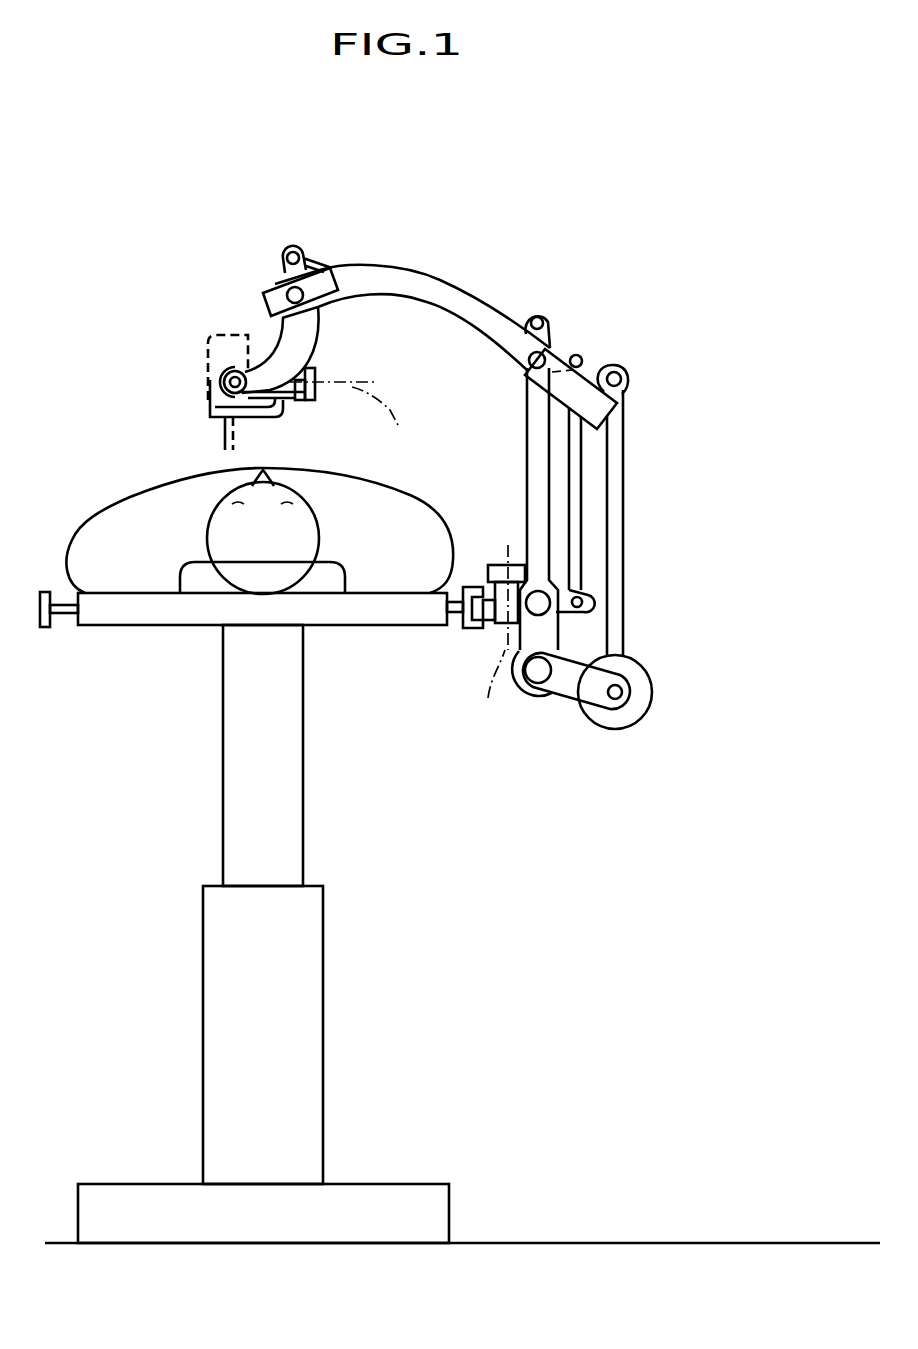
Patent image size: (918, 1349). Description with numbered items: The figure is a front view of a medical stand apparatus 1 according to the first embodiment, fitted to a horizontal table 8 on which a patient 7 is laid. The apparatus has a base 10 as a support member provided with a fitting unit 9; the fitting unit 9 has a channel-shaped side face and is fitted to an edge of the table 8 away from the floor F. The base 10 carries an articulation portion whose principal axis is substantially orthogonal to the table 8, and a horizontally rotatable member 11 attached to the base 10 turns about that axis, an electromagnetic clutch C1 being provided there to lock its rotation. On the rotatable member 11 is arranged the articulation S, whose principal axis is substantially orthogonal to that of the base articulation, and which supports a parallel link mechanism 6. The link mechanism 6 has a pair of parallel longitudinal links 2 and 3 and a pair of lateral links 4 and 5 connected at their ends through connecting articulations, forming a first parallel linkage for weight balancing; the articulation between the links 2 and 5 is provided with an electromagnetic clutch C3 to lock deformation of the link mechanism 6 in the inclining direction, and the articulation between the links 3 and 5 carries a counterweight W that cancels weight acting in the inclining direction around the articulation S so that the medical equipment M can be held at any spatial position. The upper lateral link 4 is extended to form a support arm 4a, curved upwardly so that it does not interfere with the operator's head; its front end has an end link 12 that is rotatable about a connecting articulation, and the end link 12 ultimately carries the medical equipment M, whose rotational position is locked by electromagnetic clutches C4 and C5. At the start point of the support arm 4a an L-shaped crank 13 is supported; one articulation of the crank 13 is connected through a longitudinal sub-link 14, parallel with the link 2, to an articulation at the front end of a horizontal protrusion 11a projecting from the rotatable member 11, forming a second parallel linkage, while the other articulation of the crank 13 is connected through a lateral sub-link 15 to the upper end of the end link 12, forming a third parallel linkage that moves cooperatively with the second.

The stand apparatus 1 is at (503, 176).
The longitudinal link 2 is at (527, 458).
The longitudinal link 3 is at (620, 535).
The lateral link 4 is at (502, 532).
The support arm 4a is at (433, 277).
The lateral link 5 is at (567, 695).
The parallel link mechanism 6 is at (665, 523).
The patient 7 is at (113, 505).
The horizontal table 8 is at (380, 617).
The fitting unit 9 is at (444, 651).
The base 10 is at (489, 610).
The rotatable member 11 is at (496, 568).
The horizontal protrusion 11a is at (588, 598).
The end link 12 is at (312, 348).
The L-shaped crank 13 is at (548, 347).
The longitudinal sub-link 14 is at (583, 468).
The lateral sub-link 15 is at (500, 313).
The medical equipment M is at (205, 345).
The articulation S is at (550, 613).
The counterweight W is at (645, 703).
The floor F is at (748, 1242).
The electromagnetic clutch C1 is at (507, 558).
The electromagnetic clutch C3 is at (538, 685).
The electromagnetic clutch C4 is at (228, 385).
The electromagnetic clutch C5 is at (314, 400).